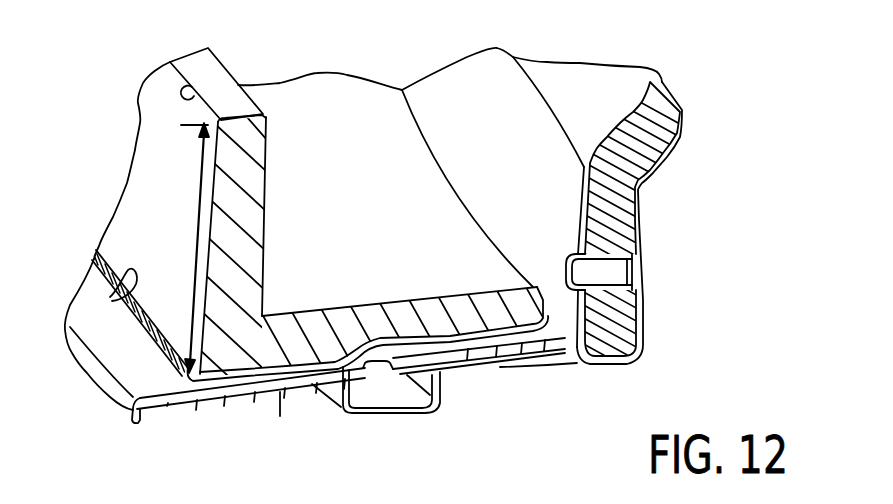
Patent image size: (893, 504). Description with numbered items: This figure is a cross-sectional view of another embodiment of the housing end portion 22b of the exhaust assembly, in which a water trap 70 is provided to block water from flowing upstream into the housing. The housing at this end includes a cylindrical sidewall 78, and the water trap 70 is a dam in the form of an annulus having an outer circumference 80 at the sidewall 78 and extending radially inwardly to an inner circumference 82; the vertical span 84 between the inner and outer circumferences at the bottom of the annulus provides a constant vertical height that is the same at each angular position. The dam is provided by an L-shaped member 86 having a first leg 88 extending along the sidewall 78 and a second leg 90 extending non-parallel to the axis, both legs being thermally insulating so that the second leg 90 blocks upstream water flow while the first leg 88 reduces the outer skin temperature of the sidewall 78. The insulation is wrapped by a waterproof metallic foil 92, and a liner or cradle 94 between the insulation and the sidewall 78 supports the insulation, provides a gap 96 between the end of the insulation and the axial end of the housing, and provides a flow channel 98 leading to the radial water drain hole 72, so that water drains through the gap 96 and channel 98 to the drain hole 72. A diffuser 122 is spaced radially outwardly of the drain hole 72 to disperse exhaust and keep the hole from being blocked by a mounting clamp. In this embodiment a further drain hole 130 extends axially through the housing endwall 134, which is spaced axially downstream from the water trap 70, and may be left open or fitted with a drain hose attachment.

The water trap 70 is at (202, 57).
The inner circumference 82 is at (193, 98).
The vertical span 84 is at (200, 188).
The second leg 90 is at (252, 195).
The outer circumference 80 is at (110, 297).
The L-shaped member 86 is at (263, 315).
The first leg 88 is at (349, 318).
The metallic foil 92 is at (462, 292).
The liner or cradle 94 is at (414, 342).
The gap 96 is at (565, 318).
The housing endwall 134 is at (645, 197).
The drain hole 130 is at (613, 270).
The flow channel or passage 98 is at (485, 345).
The cylindrical sidewall 78 is at (255, 393).
The housing end portion 22b is at (182, 402).
The water drain hole 72 is at (383, 363).
The diffuser 122 is at (430, 413).